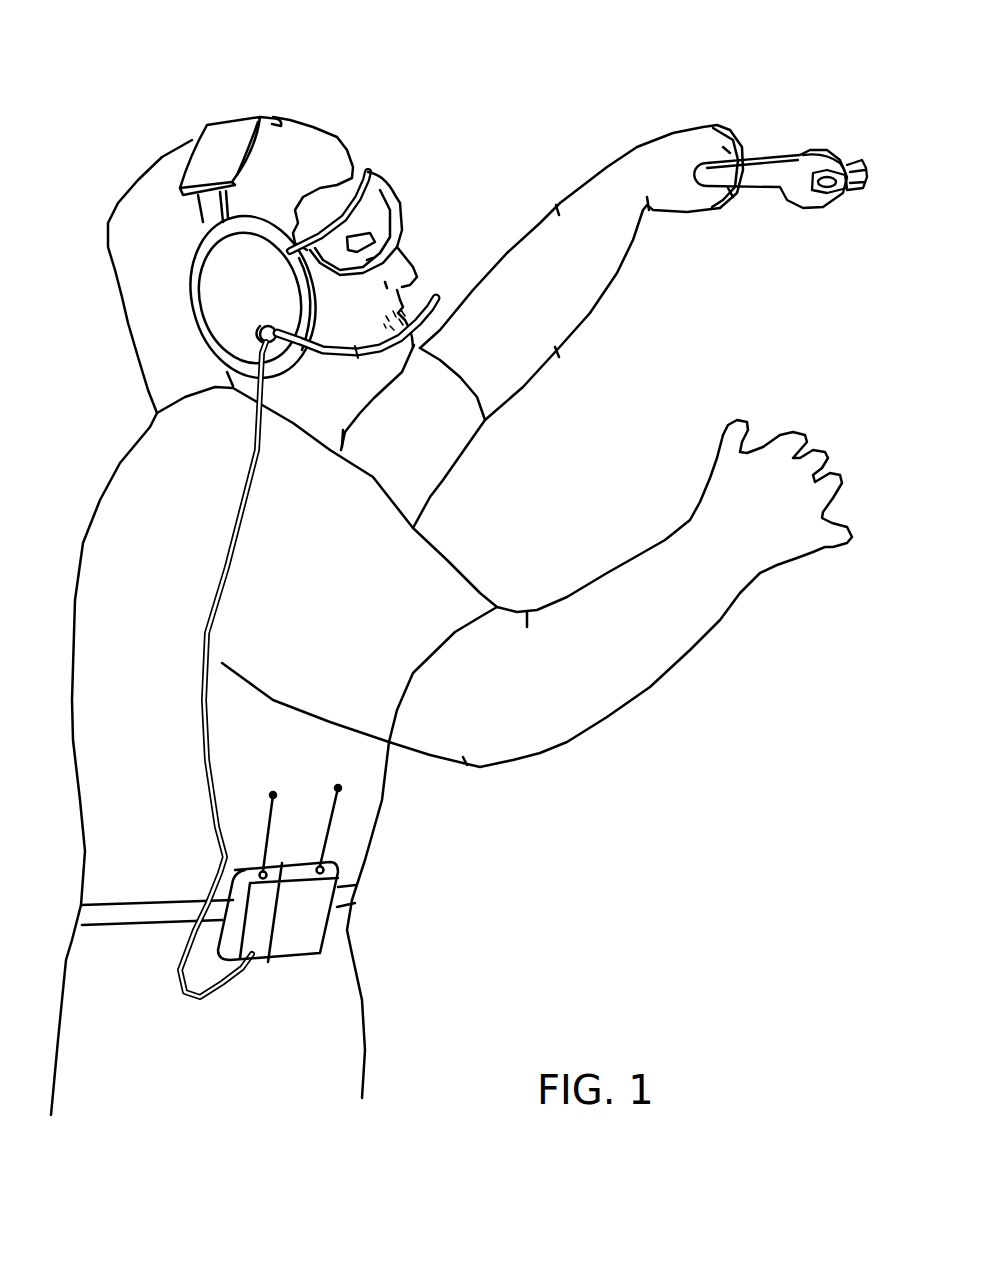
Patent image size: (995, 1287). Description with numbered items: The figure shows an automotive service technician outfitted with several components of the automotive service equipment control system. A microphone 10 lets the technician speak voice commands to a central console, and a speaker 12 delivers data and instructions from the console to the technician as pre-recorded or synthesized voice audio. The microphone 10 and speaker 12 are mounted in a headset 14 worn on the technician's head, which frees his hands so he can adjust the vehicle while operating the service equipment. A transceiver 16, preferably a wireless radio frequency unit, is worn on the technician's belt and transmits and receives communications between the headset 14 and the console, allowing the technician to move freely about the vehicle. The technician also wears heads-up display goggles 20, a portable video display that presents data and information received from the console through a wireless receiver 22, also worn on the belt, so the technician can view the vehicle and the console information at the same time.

The microphone 10 is at (438, 297).
The speaker 12 is at (205, 298).
The headset 14 is at (221, 113).
The transceiver 16 is at (300, 945).
The heads-up display goggles 20 is at (398, 183).
The wireless receiver 22 is at (254, 954).